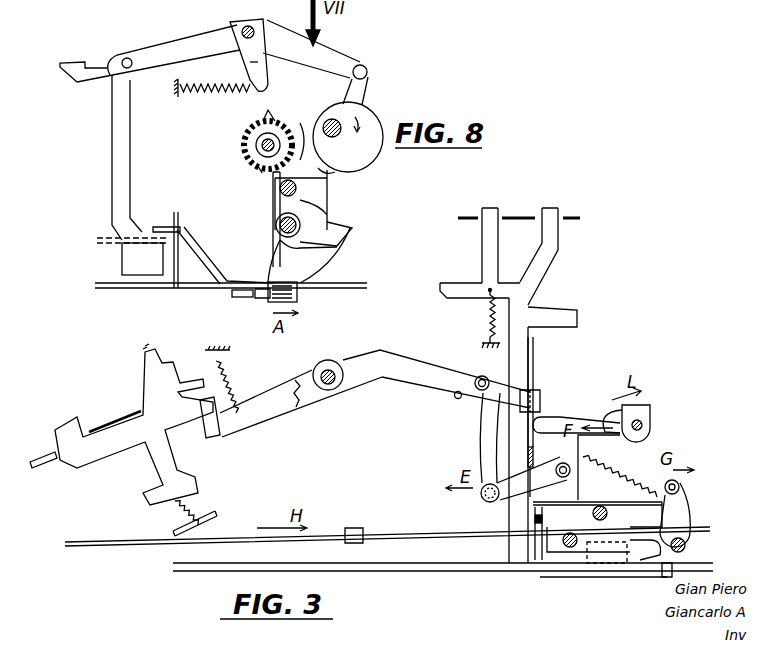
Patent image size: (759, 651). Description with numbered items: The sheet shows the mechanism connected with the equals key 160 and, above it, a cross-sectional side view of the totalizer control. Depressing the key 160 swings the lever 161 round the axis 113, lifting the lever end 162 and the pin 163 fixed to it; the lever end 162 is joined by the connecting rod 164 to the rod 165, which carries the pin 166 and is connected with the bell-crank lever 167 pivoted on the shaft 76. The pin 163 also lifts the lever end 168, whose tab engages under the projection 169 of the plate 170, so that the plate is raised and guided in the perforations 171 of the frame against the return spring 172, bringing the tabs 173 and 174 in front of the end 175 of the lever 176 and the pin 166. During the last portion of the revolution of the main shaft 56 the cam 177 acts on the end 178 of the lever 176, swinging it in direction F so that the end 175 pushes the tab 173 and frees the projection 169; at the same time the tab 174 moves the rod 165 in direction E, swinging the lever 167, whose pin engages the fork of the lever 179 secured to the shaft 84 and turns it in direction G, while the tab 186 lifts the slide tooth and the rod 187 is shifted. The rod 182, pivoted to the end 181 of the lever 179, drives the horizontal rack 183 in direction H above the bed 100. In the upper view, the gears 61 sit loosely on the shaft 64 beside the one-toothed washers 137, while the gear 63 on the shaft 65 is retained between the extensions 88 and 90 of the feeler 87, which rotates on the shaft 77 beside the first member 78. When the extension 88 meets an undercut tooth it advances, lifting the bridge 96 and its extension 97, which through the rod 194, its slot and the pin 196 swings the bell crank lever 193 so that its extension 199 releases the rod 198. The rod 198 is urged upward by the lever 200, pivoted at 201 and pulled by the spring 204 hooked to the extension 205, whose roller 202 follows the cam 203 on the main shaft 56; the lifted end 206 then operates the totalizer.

In FIG. 8, the lever 200 is at (160, 49).
In FIG. 8, the pivot 201 is at (251, 26).
In FIG. 8, the roller 202 is at (380, 56).
In FIG. 8, the cam 203 is at (364, 97).
In FIG. 8, the spring 204 is at (236, 93).
In FIG. 8, the extension 205 is at (250, 63).
In FIG. 8, the end of lever 206 is at (62, 63).
In FIG. 8, the rod 198 is at (118, 158).
In FIG. 8, the extension 199 is at (158, 227).
In FIG. 8, the bell crank lever 193 is at (195, 250).
In FIG. 8, the rod 194 is at (270, 294).
In FIG. 8, the pin 196 is at (232, 297).
In FIG. 8, the washers 137 is at (245, 133).
In FIG. 8, the shaft 64 is at (262, 146).
In FIG. 8, the gears 61 is at (252, 164).
In FIG. 8, the gear 63 is at (270, 183).
In FIG. 8, the shaft 77 is at (278, 222).
In FIG. 8, the first member 78 is at (276, 254).
In FIG. 8, the main shaft 56 is at (325, 122).
In FIG. 3, the main shaft 56 is at (642, 422).
In FIG. 8, the extension 88 is at (302, 127).
In FIG. 8, the shaft 65 is at (337, 188).
In FIG. 8, the feeler 87 is at (322, 210).
In FIG. 8, the extension 90 is at (340, 170).
In FIG. 8, the bridge 96 is at (350, 228).
In FIG. 8, the extension 97 is at (312, 258).
In FIG. 3, the key 160 is at (157, 351).
In FIG. 3, the lever 161 is at (270, 400).
In FIG. 3, the lever end 162 is at (473, 367).
In FIG. 3, the pin 163 is at (456, 398).
In FIG. 3, the connecting rod 164 is at (492, 443).
In FIG. 3, the rod 165 is at (482, 500).
In FIG. 3, the pin 166 is at (545, 470).
In FIG. 3, the bell-crank lever 167 is at (535, 522).
In FIG. 3, the lever end 168 is at (537, 397).
In FIG. 3, the projection 169 is at (534, 363).
In FIG. 3, the plate 170 is at (527, 303).
In FIG. 3, the perforations 171 is at (537, 216).
In FIG. 3, the return spring 172 is at (487, 318).
In FIG. 3, the tab 173 is at (528, 450).
In FIG. 3, the tab 174 is at (620, 478).
In FIG. 3, the lever end 175 is at (543, 418).
In FIG. 3, the lever 176 is at (576, 447).
In FIG. 3, the cam 177 is at (645, 405).
In FIG. 3, the lever end / pin 178 is at (607, 406).
In FIG. 3, the lever 179 is at (669, 578).
In FIG. 3, the lever end 181 is at (679, 486).
In FIG. 3, the rod 182 is at (360, 530).
In FIG. 3, the horizontal rack 183 is at (233, 539).
In FIG. 3, the tab 186 is at (608, 564).
In FIG. 3, the rod 187 is at (616, 516).
In FIG. 3, the axis 113 is at (326, 368).
In FIG. 3, the bed 100 is at (192, 566).
In FIG. 3, the shaft 76 is at (571, 552).
In FIG. 3, the shaft 84 is at (688, 545).